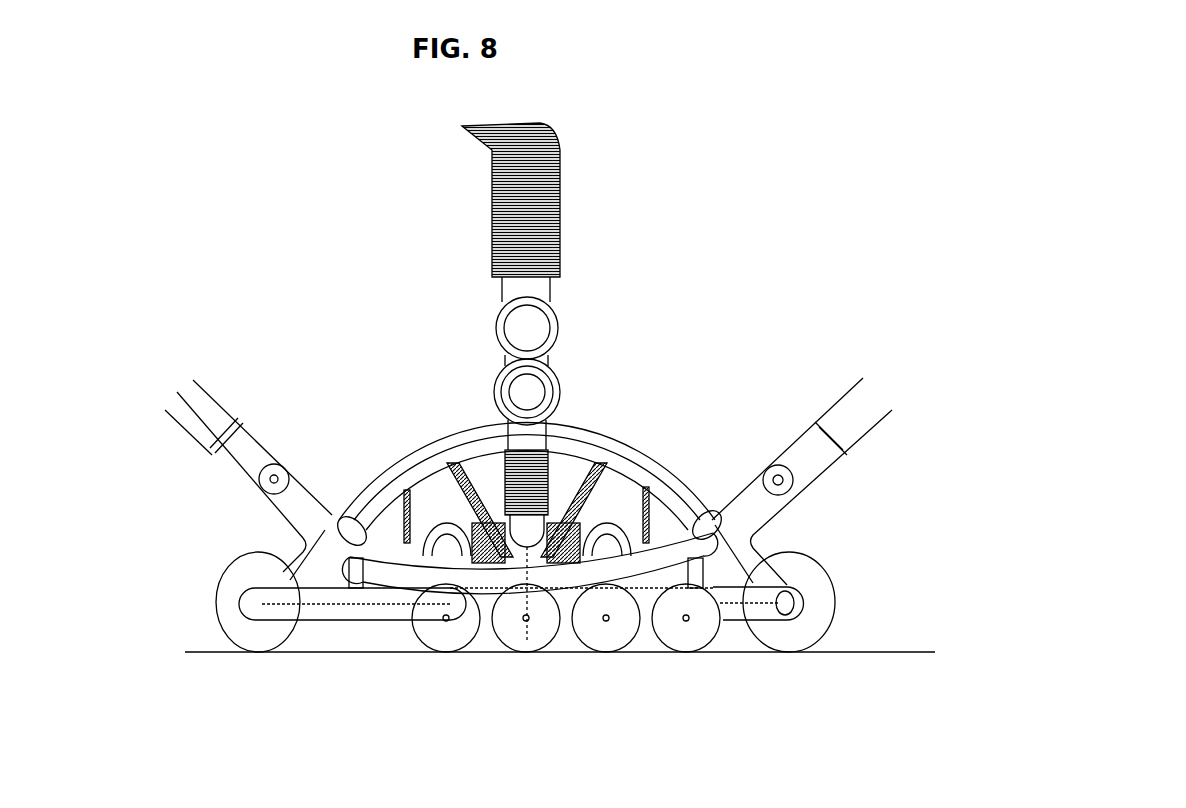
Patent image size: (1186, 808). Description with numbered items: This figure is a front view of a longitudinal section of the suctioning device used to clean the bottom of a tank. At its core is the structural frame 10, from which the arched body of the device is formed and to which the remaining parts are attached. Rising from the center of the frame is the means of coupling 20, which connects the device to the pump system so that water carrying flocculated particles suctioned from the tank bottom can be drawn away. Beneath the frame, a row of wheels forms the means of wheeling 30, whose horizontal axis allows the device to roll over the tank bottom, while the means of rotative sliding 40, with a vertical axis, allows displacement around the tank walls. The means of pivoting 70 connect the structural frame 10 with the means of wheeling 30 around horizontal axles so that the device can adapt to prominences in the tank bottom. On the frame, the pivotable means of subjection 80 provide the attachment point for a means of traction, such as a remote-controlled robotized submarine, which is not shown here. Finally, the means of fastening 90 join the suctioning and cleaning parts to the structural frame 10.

The structural frame 10 is at (432, 442).
The means of coupling 20 is at (547, 468).
The means of wheeling 30 is at (290, 650).
The means of rotative sliding 40 is at (293, 617).
The means of pivoting 70 is at (763, 600).
The means of pivotable subjection 80 is at (773, 473).
The means of fastening 90 is at (645, 487).